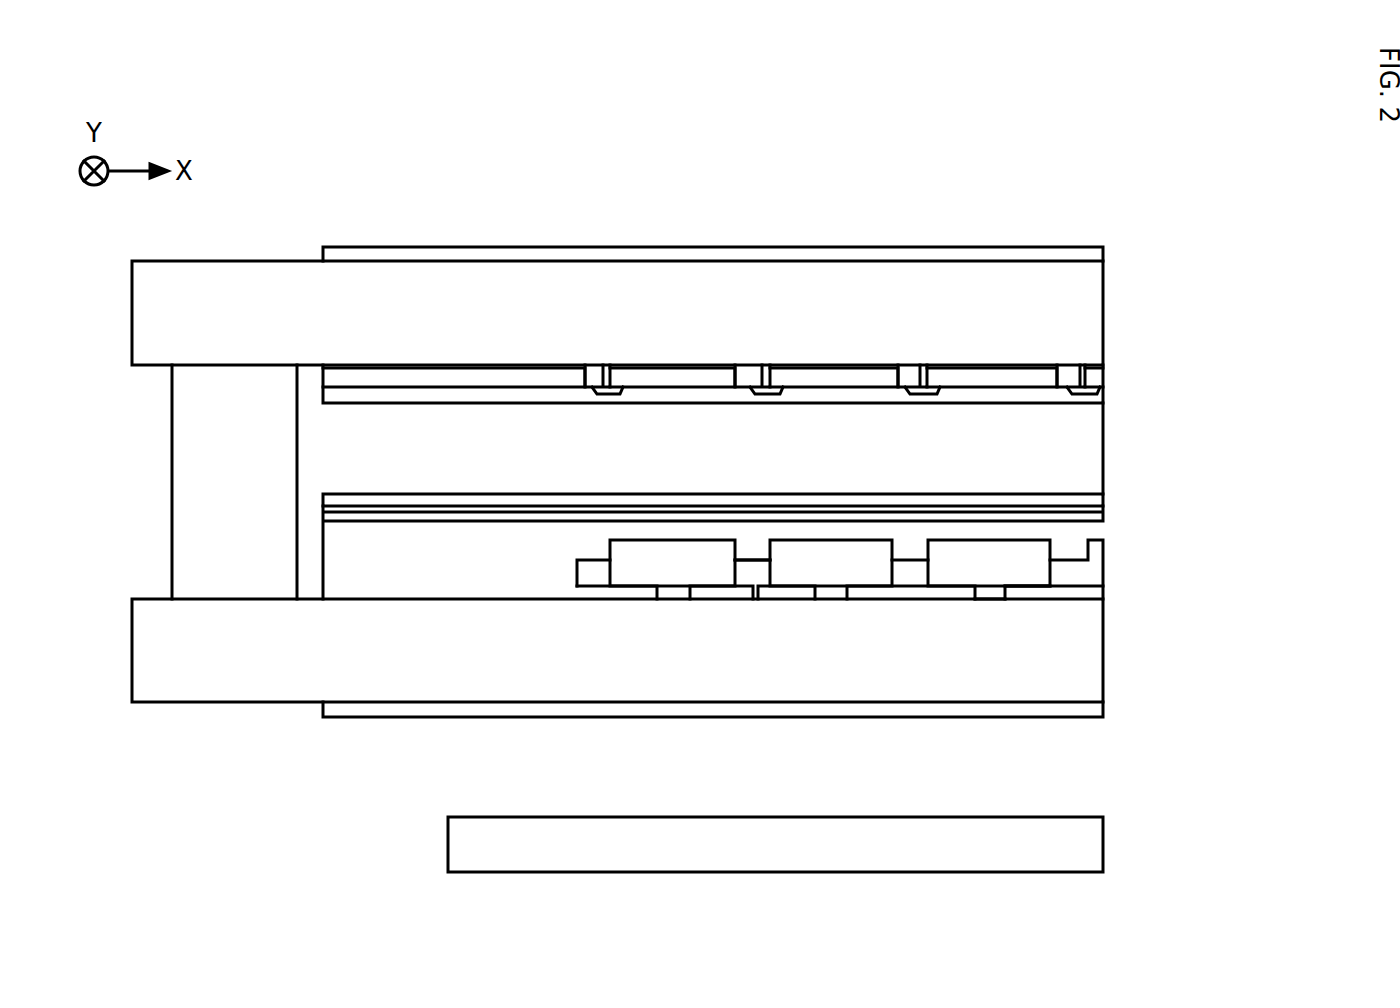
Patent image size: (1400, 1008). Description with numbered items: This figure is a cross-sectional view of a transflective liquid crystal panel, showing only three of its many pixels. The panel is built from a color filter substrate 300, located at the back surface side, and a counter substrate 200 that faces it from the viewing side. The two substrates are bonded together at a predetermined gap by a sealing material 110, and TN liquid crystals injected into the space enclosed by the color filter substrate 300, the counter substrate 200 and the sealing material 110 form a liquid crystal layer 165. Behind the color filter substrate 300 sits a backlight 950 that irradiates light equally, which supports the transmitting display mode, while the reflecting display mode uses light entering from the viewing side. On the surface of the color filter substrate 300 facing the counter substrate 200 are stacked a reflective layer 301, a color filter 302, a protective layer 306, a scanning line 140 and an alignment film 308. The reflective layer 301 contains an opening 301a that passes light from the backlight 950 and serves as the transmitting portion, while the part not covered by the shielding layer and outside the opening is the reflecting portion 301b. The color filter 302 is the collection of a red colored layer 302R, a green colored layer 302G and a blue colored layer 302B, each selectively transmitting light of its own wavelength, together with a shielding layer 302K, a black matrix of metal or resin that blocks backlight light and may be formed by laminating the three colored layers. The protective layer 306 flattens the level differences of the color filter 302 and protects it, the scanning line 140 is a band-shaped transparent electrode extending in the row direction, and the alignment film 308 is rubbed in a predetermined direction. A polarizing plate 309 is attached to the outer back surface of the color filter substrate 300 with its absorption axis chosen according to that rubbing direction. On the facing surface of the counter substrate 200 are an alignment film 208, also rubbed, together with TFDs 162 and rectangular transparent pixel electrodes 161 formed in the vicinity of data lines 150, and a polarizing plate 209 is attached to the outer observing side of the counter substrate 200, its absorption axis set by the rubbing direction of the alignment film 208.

The counter substrate 200 is at (175, 303).
The polarizing plate 209 is at (1092, 254).
The alignment film 208 is at (1103, 397).
The pixel electrode 161 is at (985, 372).
The data line 150 is at (915, 370).
The TFD 162 is at (922, 400).
The liquid crystal layer 165 is at (1073, 447).
The sealing material 110 is at (178, 470).
The alignment film 308 is at (1090, 500).
The scanning line 140 is at (1095, 517).
The protective layer 306 is at (1070, 548).
The color filter 302 is at (830, 616).
The colored layer 302R is at (667, 568).
The shielding layer 302K is at (745, 572).
The colored layer 302G is at (827, 567).
The colored layer 302B is at (962, 595).
The reflective layer 301 is at (1103, 600).
The opening 301a is at (970, 603).
The reflecting portion 301b is at (1007, 603).
The color filter substrate 300 is at (162, 645).
The polarizing plate 309 is at (321, 708).
The backlight 950 is at (460, 843).